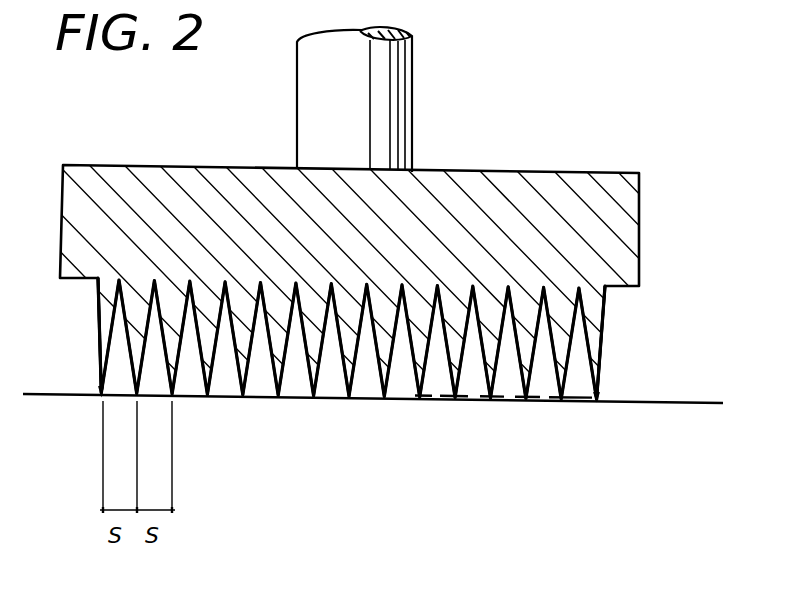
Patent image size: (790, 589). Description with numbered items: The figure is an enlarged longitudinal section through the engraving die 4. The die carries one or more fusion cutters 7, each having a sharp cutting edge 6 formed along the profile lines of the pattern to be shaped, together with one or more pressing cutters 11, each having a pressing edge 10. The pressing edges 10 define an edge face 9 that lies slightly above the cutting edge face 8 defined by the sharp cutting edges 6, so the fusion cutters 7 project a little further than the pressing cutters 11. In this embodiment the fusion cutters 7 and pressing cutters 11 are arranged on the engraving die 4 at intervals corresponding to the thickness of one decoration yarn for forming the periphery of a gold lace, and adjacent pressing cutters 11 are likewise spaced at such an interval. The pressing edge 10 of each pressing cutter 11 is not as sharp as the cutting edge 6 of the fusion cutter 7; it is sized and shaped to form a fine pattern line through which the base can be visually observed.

The engraving die 4 is at (568, 186).
The sharp cutting edge 6 is at (104, 396).
The fusion cutter 7 is at (100, 329).
The cutting edge face 8 is at (673, 402).
The edge face 9 is at (427, 399).
The pressing edge 10 is at (351, 375).
The pressing cutter 11 is at (270, 348).